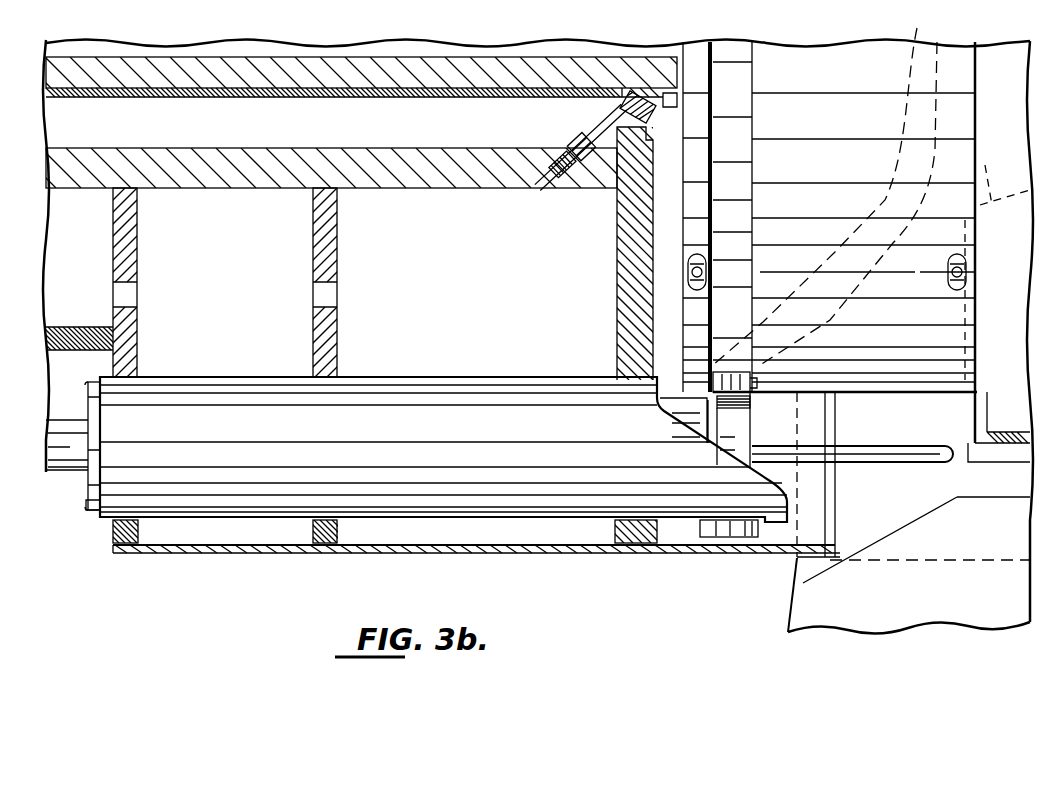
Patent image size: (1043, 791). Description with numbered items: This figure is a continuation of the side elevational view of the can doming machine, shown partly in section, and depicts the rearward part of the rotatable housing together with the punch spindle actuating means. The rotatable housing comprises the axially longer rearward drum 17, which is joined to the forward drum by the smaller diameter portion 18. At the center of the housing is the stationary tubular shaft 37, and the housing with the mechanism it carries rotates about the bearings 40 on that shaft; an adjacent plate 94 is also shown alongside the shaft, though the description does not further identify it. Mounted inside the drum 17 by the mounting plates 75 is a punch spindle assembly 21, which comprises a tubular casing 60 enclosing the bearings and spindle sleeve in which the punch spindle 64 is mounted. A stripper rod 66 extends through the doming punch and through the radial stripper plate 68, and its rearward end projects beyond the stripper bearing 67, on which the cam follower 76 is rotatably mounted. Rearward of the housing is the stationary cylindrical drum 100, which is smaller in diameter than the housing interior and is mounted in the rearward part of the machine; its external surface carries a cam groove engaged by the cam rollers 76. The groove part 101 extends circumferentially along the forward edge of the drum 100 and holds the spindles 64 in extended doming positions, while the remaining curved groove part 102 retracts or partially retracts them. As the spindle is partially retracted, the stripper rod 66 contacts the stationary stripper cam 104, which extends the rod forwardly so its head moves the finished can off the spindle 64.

The rearward drum 17 is at (478, 554).
The smaller diameter portion 18 is at (89, 346).
The punch spindle assembly 21 is at (209, 500).
The stationary tubular shaft 37 is at (386, 57).
The bearings 40 is at (622, 106).
The tubular casing 60 is at (368, 506).
The punch spindle 64 is at (77, 466).
The stripper rod 66 is at (898, 445).
The stripper bearing 67 is at (741, 428).
The radial stripper plate 68 is at (90, 501).
The mounting plates 75 is at (132, 276).
The cam follower 76 is at (731, 375).
The intermediate plate 94 is at (358, 156).
The stationary cylindrical drum 100 is at (962, 125).
The cam groove part 101 is at (741, 52).
The cam groove part 102 is at (919, 26).
The stripper cam 104 is at (985, 170).